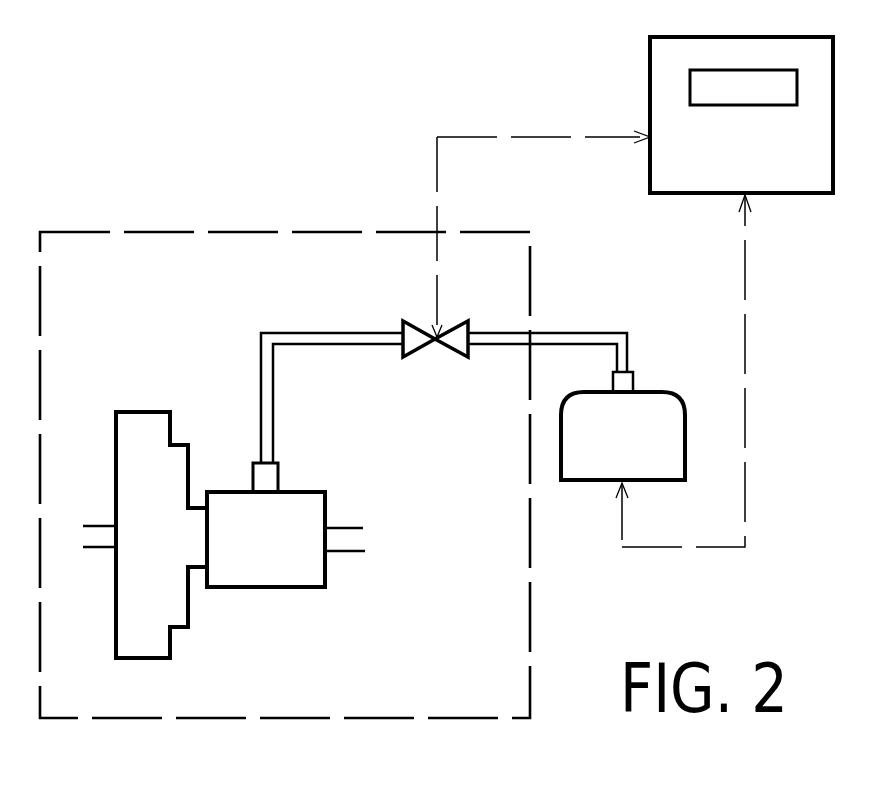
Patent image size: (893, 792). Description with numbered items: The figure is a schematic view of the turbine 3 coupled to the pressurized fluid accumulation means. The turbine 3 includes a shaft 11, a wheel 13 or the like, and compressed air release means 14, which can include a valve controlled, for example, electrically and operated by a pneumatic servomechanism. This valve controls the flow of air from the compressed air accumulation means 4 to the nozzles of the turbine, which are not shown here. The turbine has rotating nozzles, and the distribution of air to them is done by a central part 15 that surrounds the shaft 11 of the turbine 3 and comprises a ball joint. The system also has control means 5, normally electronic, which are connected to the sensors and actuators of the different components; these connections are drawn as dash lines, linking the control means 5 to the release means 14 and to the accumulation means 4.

The turbine 3 is at (83, 260).
The compressed air accumulation means 4 is at (623, 466).
The control means 5 is at (741, 115).
The shaft 11 is at (348, 538).
The wheel 13 is at (148, 411).
The compressed air release means 14 is at (437, 352).
The central part 15 is at (266, 525).